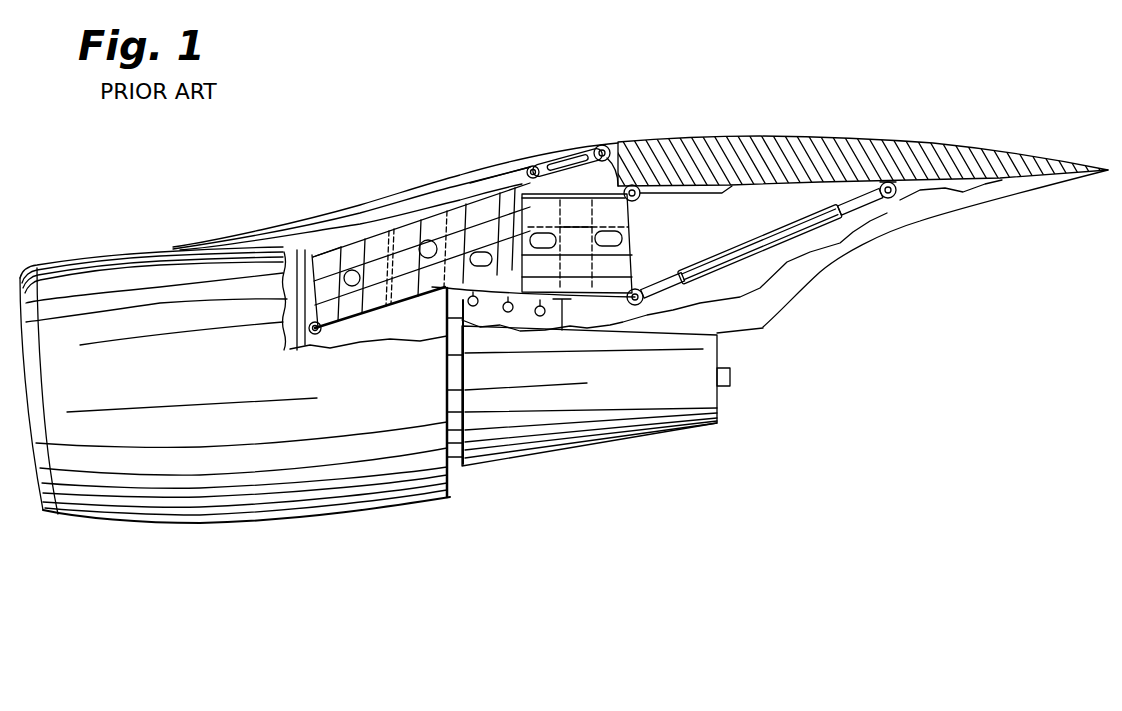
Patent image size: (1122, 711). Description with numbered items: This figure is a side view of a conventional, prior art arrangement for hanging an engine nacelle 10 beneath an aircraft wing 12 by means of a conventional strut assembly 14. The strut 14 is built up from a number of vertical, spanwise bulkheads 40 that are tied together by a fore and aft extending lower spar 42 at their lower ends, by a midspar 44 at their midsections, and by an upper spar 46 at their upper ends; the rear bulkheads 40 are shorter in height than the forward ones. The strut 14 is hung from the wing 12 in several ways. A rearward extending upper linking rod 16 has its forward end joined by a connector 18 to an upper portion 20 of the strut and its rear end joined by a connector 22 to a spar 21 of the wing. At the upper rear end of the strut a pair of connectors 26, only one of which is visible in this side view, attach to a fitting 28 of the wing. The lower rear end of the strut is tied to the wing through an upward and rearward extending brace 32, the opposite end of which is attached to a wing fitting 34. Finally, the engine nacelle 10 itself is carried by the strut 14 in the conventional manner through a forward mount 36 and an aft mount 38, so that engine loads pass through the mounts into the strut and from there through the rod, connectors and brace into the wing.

The engine nacelle 10 is at (125, 224).
The wing 12 is at (767, 134).
The strut assembly 14 is at (430, 203).
The upper linking rod 16 is at (552, 163).
The connector 18 is at (533, 165).
The upper portion of the strut 20 is at (487, 186).
The spar of the wing 21 is at (641, 182).
The connector 22 is at (611, 148).
The connectors 26 is at (684, 185).
The fitting of the wing 28 is at (730, 187).
The brace 32 is at (867, 203).
The wing fitting 34 is at (933, 180).
The forward mount 36 is at (283, 328).
The aft mount 38 is at (563, 305).
The bulkheads 40 is at (569, 222).
The lower spar 42 is at (433, 298).
The midspar 44 is at (376, 265).
The upper spar 46 is at (386, 228).